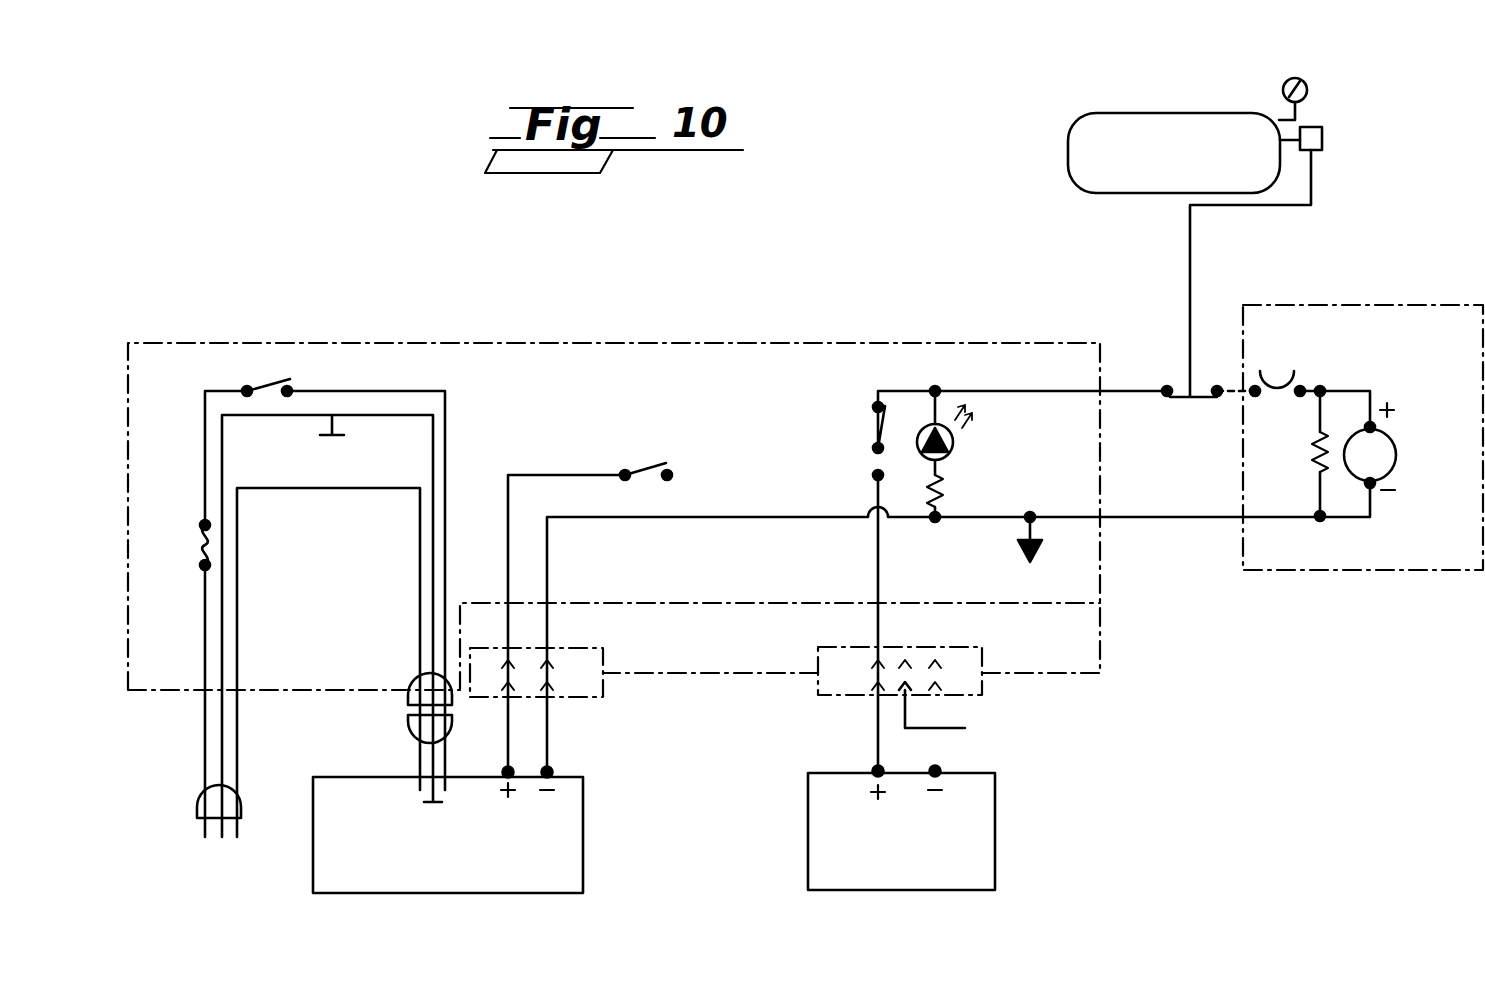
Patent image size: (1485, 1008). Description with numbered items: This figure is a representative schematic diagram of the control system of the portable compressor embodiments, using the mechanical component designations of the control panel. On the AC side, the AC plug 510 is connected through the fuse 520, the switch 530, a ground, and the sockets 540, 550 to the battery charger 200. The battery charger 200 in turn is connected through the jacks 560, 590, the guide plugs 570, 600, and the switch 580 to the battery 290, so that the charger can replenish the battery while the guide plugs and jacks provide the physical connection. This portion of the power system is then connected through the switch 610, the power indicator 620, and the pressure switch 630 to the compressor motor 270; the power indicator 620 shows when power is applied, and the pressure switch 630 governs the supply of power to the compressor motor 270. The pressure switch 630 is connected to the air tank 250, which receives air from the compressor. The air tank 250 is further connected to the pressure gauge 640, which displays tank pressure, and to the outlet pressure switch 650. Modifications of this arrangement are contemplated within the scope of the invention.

The battery charger 200 is at (430, 878).
The air tank 250 is at (1166, 179).
The compressor motor 270 is at (1423, 456).
The battery 290 is at (890, 873).
The AC plug 510 is at (197, 793).
The fuse 520 is at (202, 552).
The switch 530 is at (268, 372).
The socket 540 is at (415, 678).
The socket 550 is at (407, 733).
The jack 560 is at (592, 643).
The guide plug 570 is at (642, 734).
The switch 580 is at (642, 458).
The jack 590 is at (973, 645).
The guide plug 600 is at (962, 712).
The switch 610 is at (880, 430).
The power indicator 620 is at (960, 442).
The pressure switch 630 is at (1198, 400).
The pressure gauge 640 is at (1308, 88).
The outlet pressure switch 650 is at (1323, 140).